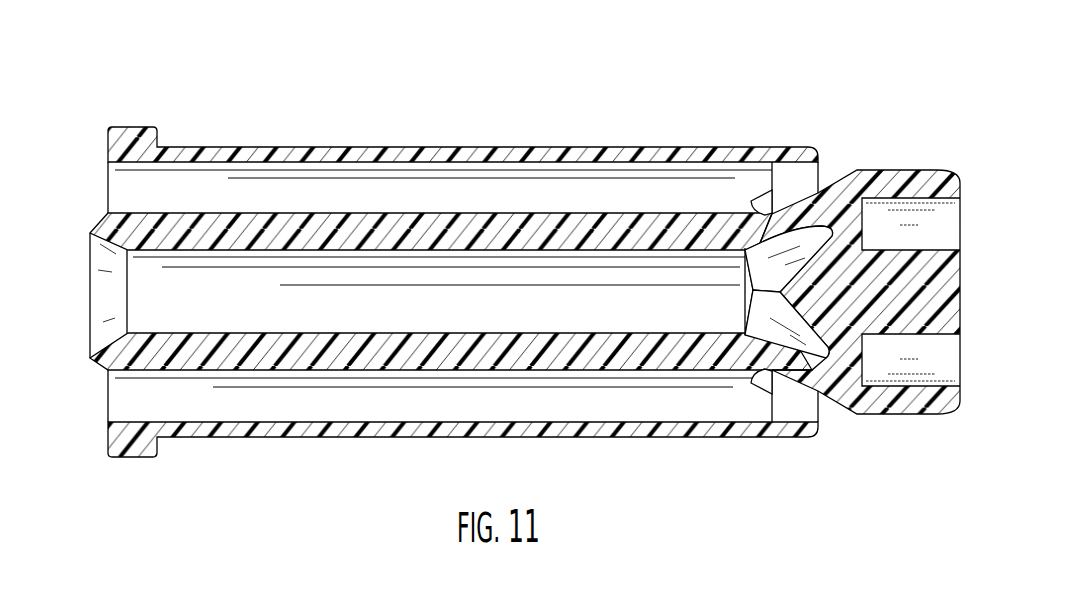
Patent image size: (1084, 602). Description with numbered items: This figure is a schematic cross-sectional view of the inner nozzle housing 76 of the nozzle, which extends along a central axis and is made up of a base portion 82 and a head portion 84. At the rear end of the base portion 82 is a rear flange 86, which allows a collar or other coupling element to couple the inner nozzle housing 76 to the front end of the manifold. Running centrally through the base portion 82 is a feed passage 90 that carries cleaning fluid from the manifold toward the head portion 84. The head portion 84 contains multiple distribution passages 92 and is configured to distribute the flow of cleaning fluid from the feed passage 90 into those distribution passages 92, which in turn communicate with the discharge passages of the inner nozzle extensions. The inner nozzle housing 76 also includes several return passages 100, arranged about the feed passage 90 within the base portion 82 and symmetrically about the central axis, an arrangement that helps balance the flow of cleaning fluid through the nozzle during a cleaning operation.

The inner nozzle housing 76 is at (188, 66).
The base portion 82 is at (430, 147).
The head portion 84 is at (870, 170).
The rear flange 86 is at (132, 127).
The feed passage 90 is at (156, 302).
The distribution passages 92 is at (757, 212).
The return passages 100 is at (276, 198).